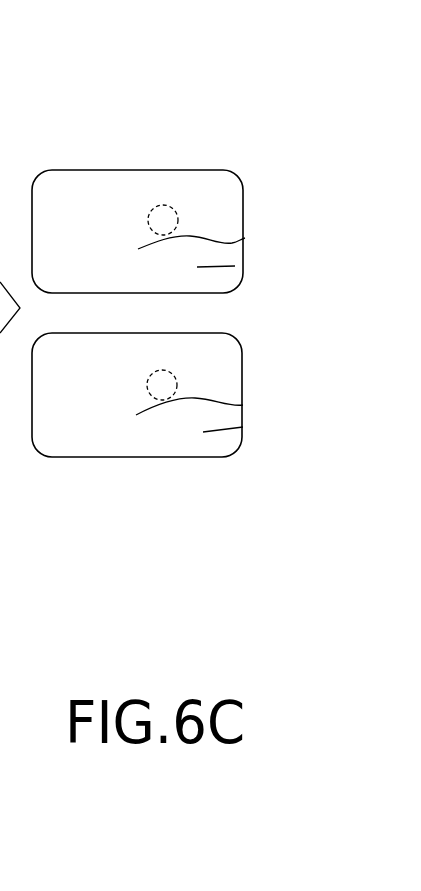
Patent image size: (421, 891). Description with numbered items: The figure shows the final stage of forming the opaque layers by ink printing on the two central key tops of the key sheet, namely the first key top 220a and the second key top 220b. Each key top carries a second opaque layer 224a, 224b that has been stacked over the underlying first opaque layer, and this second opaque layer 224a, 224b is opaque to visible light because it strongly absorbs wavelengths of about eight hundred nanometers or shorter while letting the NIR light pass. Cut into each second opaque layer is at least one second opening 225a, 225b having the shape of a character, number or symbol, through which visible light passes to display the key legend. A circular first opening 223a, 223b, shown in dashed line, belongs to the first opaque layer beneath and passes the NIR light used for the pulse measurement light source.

The first key top 220a is at (90, 457).
The second key top 220b is at (83, 170).
The first opening 223a is at (163, 385).
The first opening 223b is at (163, 220).
The second opaque layer 224a is at (153, 447).
The second opaque layer 224b is at (153, 183).
The second opening 225a is at (243, 427).
The second opening 225b is at (235, 266).